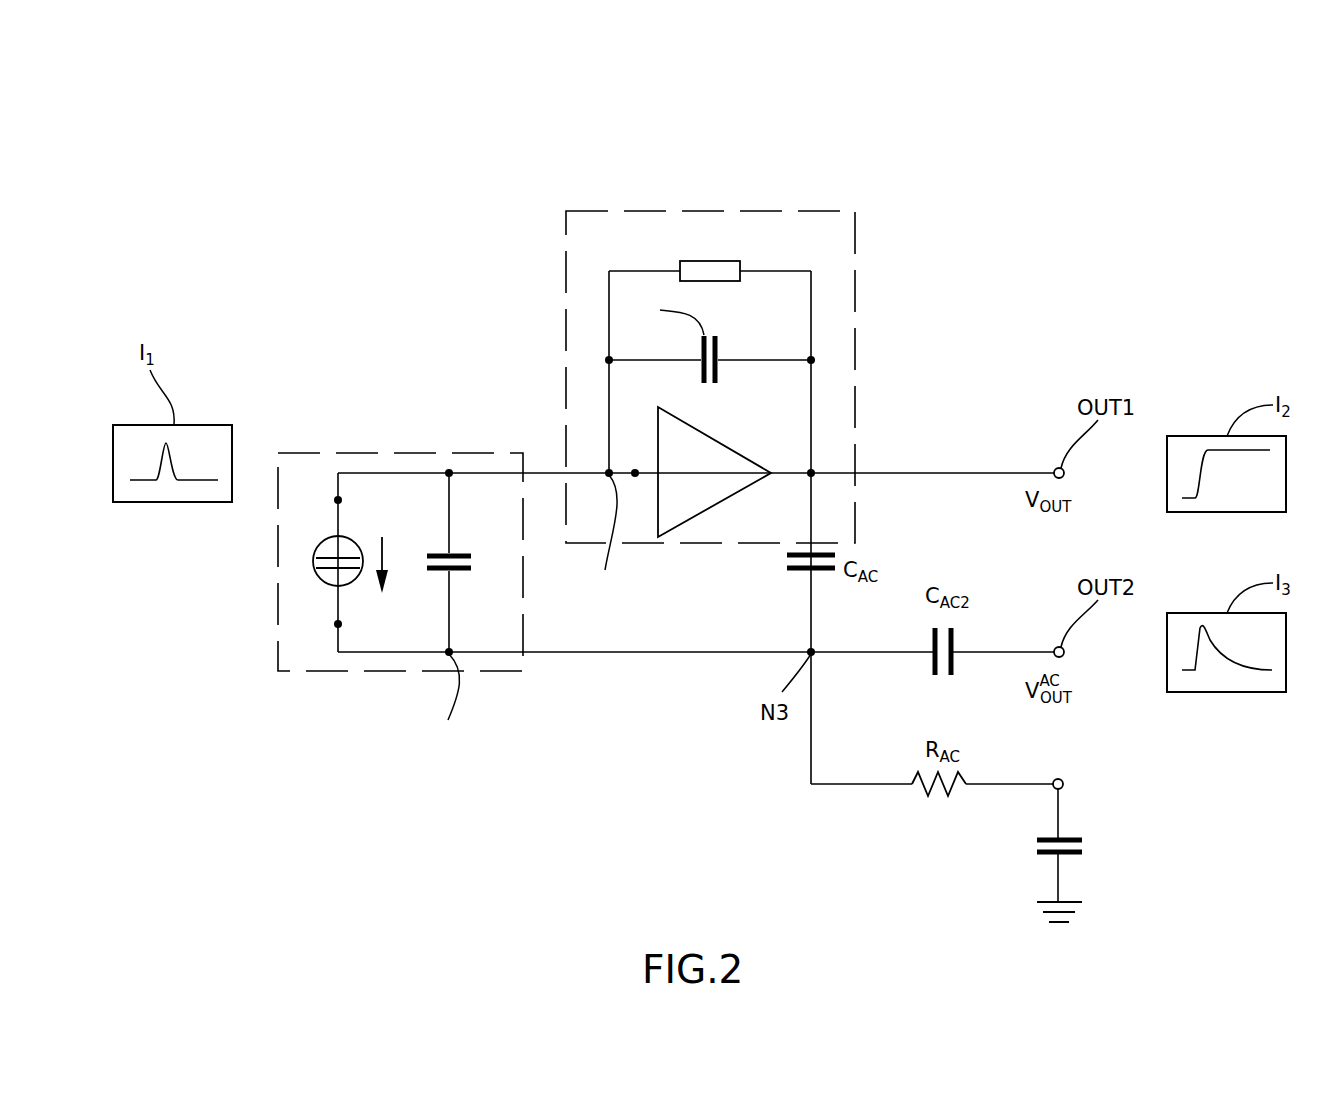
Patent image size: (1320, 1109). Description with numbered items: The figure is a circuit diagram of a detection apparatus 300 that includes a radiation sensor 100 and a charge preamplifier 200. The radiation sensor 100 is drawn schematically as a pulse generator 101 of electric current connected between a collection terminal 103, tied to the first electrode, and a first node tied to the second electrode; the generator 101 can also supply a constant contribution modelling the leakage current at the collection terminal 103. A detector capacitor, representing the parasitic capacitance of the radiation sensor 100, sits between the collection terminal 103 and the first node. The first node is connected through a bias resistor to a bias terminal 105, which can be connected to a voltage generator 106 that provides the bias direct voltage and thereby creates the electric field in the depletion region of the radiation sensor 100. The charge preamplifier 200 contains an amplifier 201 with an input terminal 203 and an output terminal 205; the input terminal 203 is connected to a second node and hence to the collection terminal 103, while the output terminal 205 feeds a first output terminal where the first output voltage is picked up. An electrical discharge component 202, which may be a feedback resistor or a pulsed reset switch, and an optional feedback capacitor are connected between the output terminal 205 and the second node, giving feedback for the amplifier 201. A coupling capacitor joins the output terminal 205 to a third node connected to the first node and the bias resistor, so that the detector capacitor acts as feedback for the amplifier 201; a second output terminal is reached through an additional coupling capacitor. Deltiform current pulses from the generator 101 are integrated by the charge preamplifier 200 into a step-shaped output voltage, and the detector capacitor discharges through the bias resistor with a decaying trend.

The radiation sensor 100 is at (352, 432).
The pulse generator 101 is at (320, 578).
The collection terminal 103 is at (449, 470).
The bias terminal 105 is at (1061, 779).
The voltage generator 106 is at (1104, 866).
The charge preamplifier 200 is at (884, 330).
The amplifier 201 is at (687, 420).
The electrical discharge component 202 is at (710, 248).
The input terminal 203 is at (635, 468).
The output terminal 205 is at (811, 470).
The detection apparatus 300 is at (740, 97).